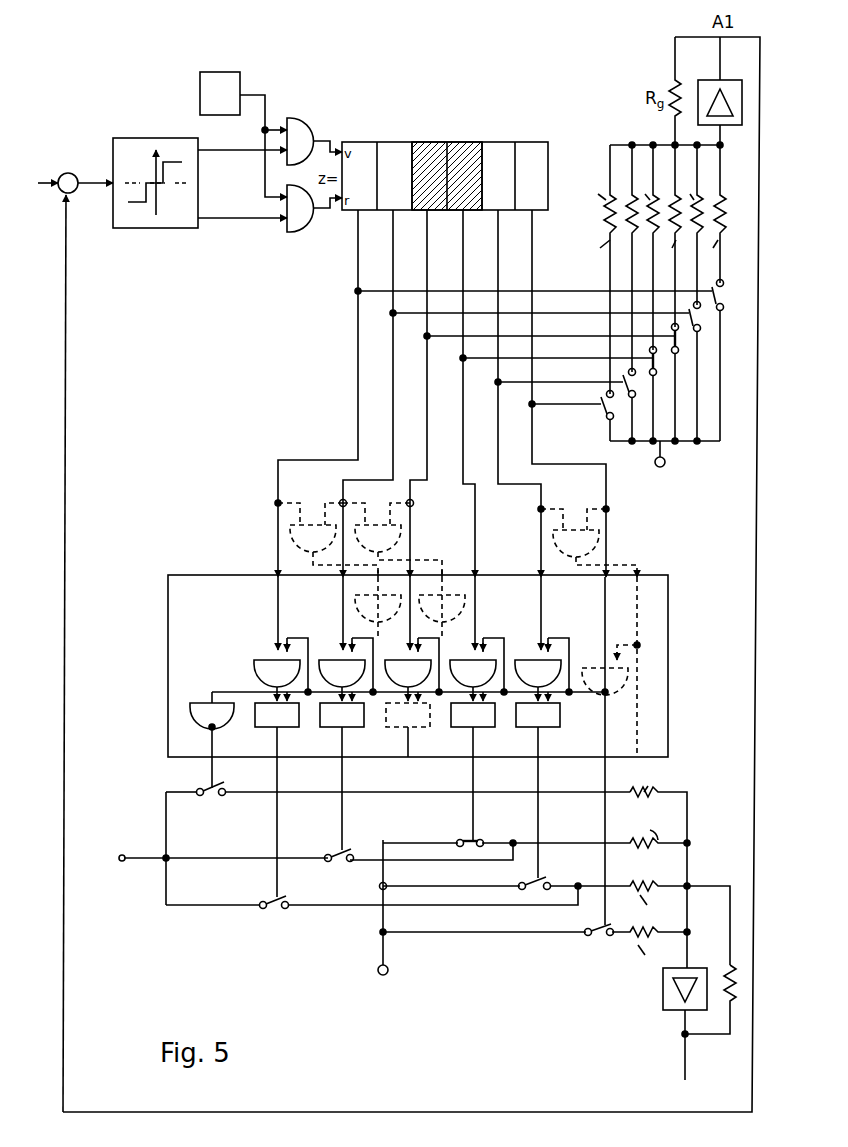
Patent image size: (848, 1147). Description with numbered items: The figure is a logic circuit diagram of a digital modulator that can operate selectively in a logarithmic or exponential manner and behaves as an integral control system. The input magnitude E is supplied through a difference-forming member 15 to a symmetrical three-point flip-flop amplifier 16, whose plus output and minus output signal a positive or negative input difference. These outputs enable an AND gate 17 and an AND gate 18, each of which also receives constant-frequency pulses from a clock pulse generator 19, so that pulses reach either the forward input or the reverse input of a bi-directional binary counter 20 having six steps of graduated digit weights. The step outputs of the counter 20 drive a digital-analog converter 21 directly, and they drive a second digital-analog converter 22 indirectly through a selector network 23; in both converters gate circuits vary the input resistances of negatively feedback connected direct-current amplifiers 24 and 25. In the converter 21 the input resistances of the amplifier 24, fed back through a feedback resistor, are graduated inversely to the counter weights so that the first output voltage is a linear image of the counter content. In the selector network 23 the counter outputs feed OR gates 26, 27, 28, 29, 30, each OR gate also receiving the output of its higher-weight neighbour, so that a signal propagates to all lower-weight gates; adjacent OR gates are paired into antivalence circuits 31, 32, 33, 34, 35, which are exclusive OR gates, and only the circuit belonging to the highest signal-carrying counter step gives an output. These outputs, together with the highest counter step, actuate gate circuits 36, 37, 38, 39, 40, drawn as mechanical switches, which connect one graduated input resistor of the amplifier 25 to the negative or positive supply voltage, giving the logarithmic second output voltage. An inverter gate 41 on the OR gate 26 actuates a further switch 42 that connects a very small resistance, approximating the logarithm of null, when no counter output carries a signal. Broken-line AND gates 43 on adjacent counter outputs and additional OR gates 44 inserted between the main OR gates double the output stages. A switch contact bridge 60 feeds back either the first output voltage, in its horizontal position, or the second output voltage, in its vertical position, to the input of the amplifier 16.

The difference-forming member 15 is at (70, 171).
The symmetrical three-point flip-flop amplifier 16 is at (148, 228).
The AND gate 17 is at (300, 125).
The AND gate 18 is at (303, 224).
The clock pulse generator 19 is at (200, 95).
The bi-directional binary counter 20 is at (467, 143).
The digital-analog converter 21 is at (744, 385).
The second digital-analog converter 22 is at (483, 961).
The selector network 23 is at (168, 625).
The direct-current amplifier 24 is at (733, 82).
The direct-current amplifier 25 is at (663, 990).
The OR gate 26 is at (258, 672).
The OR gate 27 is at (333, 664).
The OR gate 28 is at (399, 664).
The OR gate 29 is at (464, 664).
The OR gate 30 is at (529, 664).
The antivalence circuit 31 is at (258, 735).
The antivalence circuit 32 is at (325, 735).
The antivalence circuit 33 is at (390, 735).
The antivalence circuit 34 is at (490, 735).
The antivalence circuit 35 is at (556, 735).
The gate circuit 36 is at (270, 892).
The gate circuit 37 is at (336, 846).
The gate circuit 38 is at (472, 840).
The gate circuit 39 is at (537, 878).
The gate circuit 40 is at (596, 936).
The inverter gate 41 is at (203, 724).
The switch 42 is at (398, 801).
The AND gates 43 is at (607, 540).
The additional OR gates 44 is at (356, 605).
The switch contact bridge 60 is at (698, 1112).